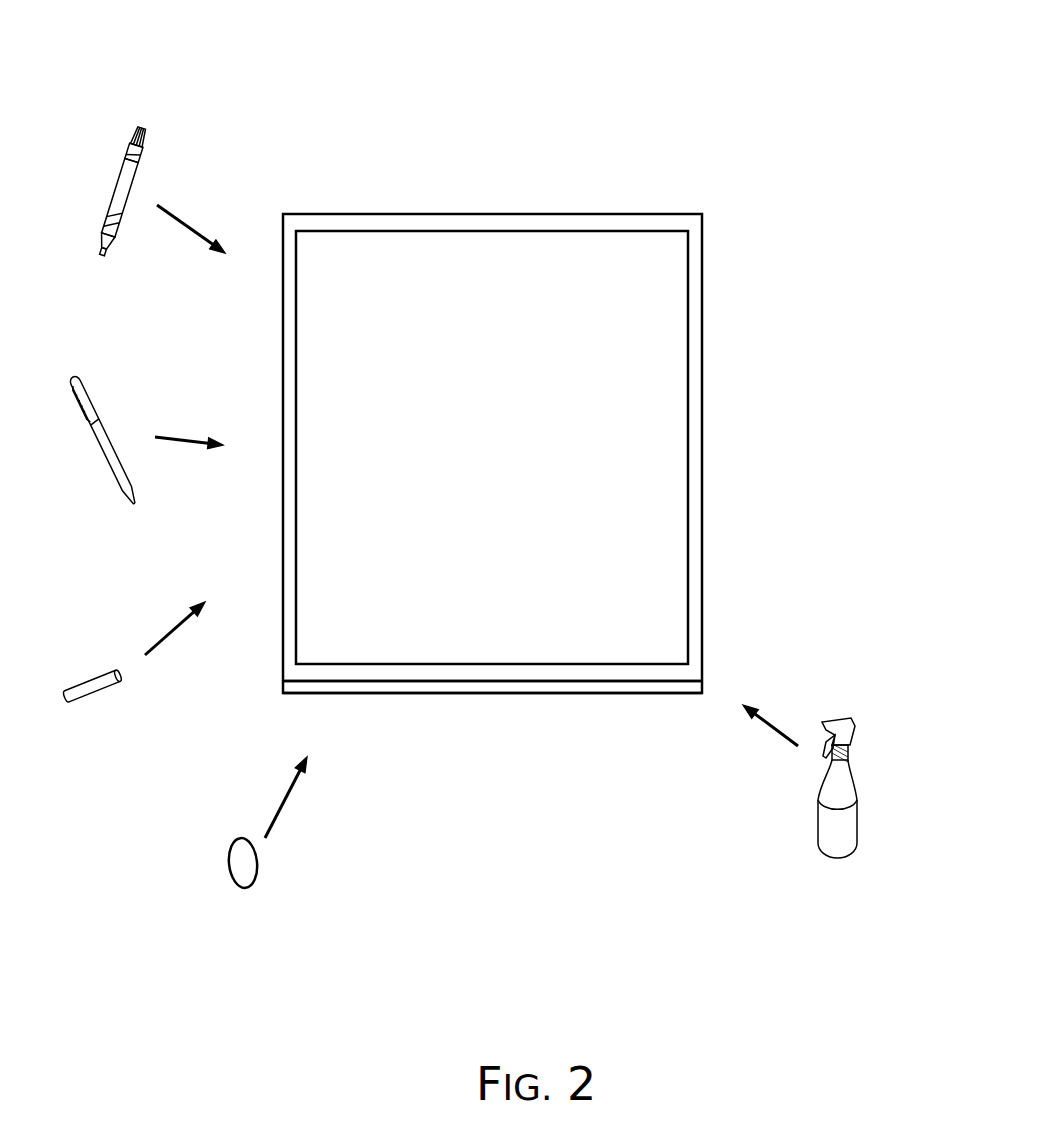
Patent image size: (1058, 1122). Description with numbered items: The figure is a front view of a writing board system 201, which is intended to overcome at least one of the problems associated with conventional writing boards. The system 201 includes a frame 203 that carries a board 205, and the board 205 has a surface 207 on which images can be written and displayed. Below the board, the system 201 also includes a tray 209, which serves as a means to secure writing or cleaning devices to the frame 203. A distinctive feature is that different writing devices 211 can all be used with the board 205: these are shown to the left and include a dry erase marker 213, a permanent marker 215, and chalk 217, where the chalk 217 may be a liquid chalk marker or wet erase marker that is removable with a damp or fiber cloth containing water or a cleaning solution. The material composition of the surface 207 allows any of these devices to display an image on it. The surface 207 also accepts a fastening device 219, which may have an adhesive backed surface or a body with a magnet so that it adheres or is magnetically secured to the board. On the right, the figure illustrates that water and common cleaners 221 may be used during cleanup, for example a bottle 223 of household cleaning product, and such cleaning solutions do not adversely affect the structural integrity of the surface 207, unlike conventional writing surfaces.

The writing board system 201 is at (806, 60).
The frame 203 is at (702, 273).
The board 205 is at (688, 440).
The surface 207 is at (498, 418).
The tray 209 is at (463, 693).
The writing devices 211 is at (254, 74).
The dry erase marker 213 is at (112, 186).
The permanent marker 215 is at (100, 452).
The chalk 217 is at (92, 679).
The fastening device 219 is at (229, 857).
The common cleaners 221 is at (778, 836).
The bottle 223 is at (850, 780).